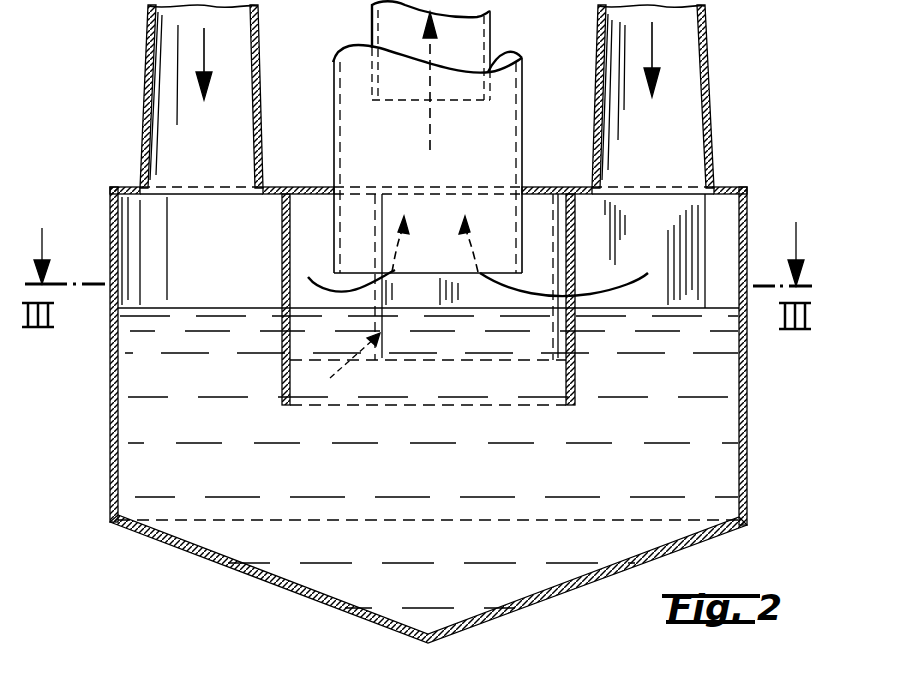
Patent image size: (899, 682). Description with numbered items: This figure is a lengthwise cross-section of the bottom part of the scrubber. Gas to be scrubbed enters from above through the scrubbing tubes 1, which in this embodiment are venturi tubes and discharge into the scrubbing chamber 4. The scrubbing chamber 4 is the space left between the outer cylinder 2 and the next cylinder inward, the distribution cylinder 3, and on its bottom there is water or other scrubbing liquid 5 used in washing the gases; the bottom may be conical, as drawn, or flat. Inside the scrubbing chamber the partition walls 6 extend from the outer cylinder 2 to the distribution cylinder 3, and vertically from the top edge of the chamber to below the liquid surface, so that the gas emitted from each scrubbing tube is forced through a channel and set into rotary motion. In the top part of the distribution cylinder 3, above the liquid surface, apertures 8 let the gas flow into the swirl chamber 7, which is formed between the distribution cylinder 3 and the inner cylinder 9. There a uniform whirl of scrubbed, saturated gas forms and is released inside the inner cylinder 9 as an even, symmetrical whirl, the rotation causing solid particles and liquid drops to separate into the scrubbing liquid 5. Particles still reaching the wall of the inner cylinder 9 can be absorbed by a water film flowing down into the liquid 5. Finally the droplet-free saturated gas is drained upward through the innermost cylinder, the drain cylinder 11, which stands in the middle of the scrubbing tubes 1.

The scrubbing tubes 1 is at (175, 34).
The outer cylinder 2 is at (747, 228).
The distribution cylinder 3 is at (283, 388).
The scrubbing chamber 4 is at (137, 226).
The scrubbing liquid 5 is at (710, 440).
The partition walls 6 is at (284, 268).
The swirl chamber 7 is at (306, 226).
The apertures 8 is at (352, 298).
The inner cylinder 9 is at (500, 135).
The drain cylinder 11 is at (472, 35).